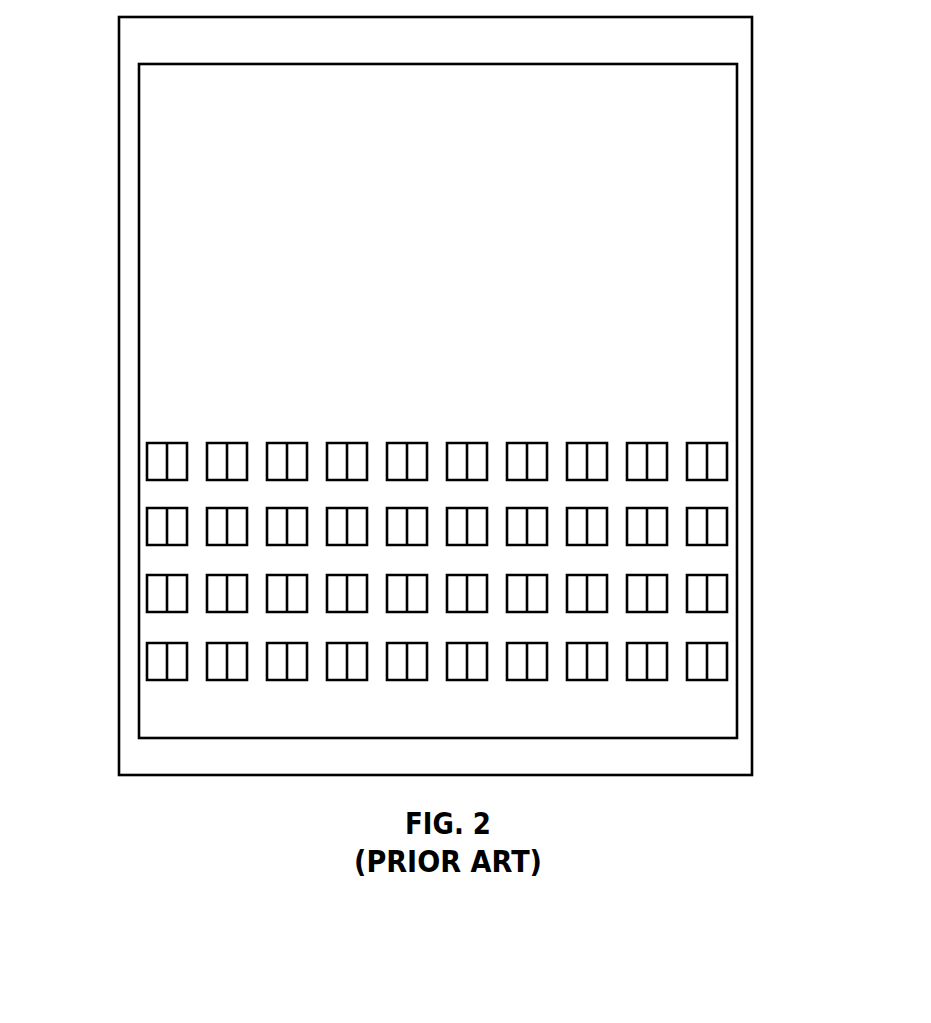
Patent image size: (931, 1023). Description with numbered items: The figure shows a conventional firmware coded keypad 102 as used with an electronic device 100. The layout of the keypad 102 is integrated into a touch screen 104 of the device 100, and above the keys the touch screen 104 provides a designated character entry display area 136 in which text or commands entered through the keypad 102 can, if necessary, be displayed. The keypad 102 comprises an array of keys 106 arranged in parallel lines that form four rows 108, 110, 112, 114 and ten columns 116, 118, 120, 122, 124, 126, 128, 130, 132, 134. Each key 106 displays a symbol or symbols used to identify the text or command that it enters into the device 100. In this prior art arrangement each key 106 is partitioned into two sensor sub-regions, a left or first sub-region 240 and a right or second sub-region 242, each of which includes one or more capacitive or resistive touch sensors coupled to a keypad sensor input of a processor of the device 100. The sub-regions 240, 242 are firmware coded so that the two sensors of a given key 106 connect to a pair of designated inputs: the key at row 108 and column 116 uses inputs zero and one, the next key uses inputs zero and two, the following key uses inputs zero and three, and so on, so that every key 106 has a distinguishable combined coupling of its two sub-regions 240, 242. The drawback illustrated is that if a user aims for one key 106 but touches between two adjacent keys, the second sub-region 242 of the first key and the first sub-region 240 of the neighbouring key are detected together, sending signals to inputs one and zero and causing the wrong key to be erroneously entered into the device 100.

The electronic device 100 is at (194, 853).
The keypad 102 is at (703, 719).
The touch screen 104 is at (464, 310).
The key 106 is at (726, 457).
The row 108 is at (142, 461).
The row 110 is at (142, 527).
The row 112 is at (142, 593).
The row 114 is at (142, 660).
The column 116 is at (167, 440).
The column 118 is at (227, 440).
The column 120 is at (287, 440).
The column 122 is at (347, 440).
The column 124 is at (407, 440).
The column 126 is at (467, 440).
The column 128 is at (527, 440).
The column 130 is at (587, 440).
The column 132 is at (647, 440).
The column 134 is at (707, 440).
The character entry display area 136 is at (251, 183).
The first sub-region 240 is at (263, 705).
The second sub-region 242 is at (305, 705).